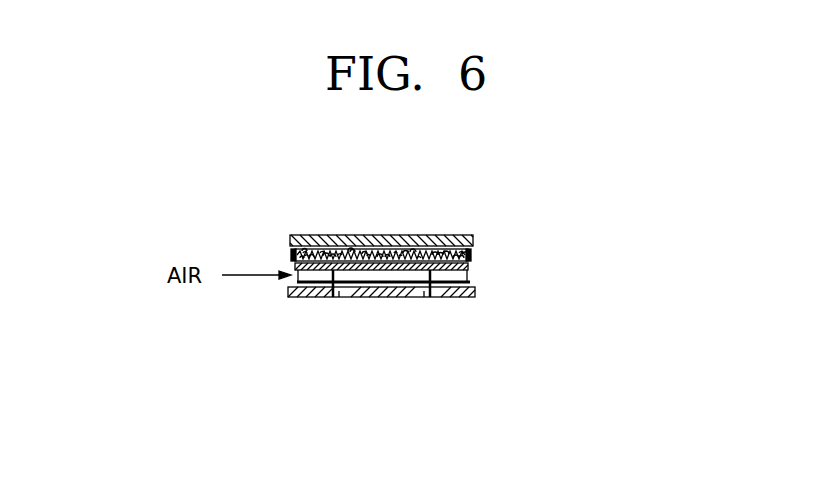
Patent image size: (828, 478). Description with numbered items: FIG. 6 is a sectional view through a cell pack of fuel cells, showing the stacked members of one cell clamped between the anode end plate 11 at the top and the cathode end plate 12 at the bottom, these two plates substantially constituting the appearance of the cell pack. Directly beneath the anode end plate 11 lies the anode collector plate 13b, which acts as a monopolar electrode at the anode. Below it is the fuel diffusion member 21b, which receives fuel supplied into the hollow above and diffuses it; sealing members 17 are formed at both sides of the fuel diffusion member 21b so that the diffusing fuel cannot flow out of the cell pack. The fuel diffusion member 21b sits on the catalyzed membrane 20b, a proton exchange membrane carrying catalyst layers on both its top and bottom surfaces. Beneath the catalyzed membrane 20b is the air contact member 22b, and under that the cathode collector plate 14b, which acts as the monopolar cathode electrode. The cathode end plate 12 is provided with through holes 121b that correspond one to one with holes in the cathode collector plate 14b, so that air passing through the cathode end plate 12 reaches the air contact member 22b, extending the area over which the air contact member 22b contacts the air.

The anode end plate 11 is at (471, 236).
The cathode end plate 12 is at (478, 293).
The anode collector plate 13b is at (387, 252).
The cathode collector plate 14b is at (470, 281).
The sealing member 17 is at (291, 244).
The catalyzed membrane 20b is at (470, 266).
The fuel diffusion member 21b is at (294, 253).
The air contact member 22b is at (470, 273).
The through hole 121b is at (336, 298).